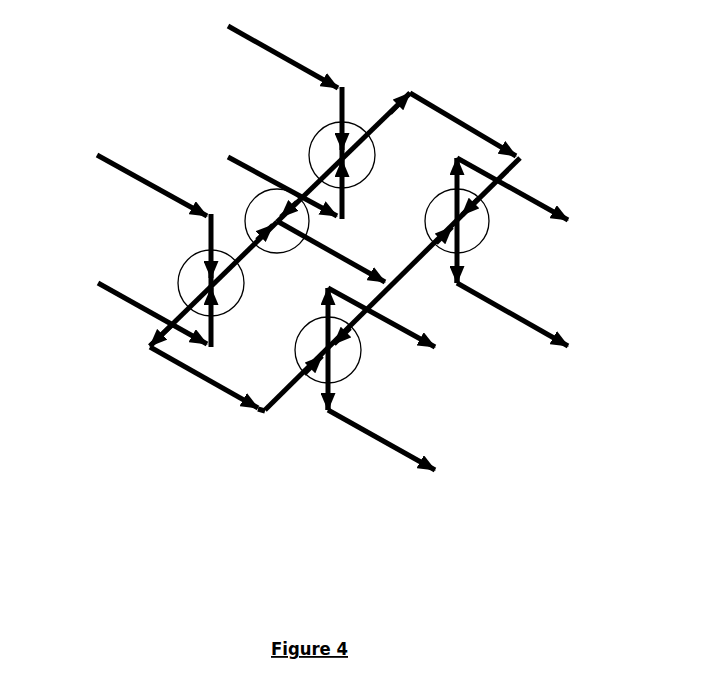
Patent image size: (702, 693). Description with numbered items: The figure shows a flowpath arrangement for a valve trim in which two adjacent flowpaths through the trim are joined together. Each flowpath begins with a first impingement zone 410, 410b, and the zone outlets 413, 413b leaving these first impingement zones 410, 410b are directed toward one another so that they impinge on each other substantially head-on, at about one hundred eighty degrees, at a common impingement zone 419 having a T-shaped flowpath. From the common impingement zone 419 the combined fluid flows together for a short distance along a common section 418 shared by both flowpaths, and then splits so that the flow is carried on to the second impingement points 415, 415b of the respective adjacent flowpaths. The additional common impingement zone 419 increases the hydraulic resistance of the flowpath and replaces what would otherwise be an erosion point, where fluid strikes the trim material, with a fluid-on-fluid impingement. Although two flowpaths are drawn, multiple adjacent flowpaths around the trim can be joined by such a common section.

The first impingement zone 410 is at (380, 154).
The first impingement zone 410b is at (177, 266).
The zone outlet 413 is at (308, 186).
The zone outlet 413b is at (243, 250).
The second impingement point 415 is at (493, 241).
The second impingement point 415b is at (365, 350).
The common section 418 is at (344, 253).
The common impingement zone 419 is at (259, 203).